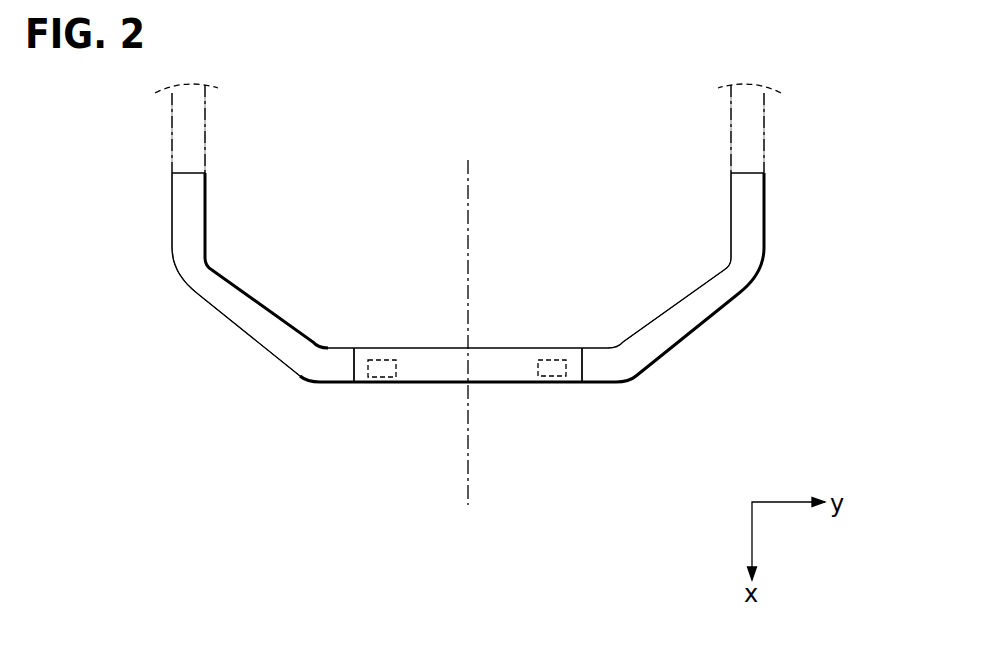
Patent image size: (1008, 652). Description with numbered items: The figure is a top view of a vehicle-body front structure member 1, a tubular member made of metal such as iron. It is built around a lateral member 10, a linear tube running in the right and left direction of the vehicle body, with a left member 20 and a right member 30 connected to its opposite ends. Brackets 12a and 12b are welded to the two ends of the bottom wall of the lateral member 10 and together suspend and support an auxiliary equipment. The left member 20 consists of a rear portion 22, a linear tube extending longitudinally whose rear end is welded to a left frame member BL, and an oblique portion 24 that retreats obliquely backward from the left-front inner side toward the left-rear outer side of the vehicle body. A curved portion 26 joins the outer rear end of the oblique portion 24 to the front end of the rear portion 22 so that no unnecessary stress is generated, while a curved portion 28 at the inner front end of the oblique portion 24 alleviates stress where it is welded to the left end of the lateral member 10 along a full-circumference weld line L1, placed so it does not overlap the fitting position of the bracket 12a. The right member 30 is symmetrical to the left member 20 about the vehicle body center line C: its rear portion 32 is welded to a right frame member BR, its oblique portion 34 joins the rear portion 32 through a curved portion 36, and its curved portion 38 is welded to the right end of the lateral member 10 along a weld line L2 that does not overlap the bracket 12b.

The vehicle-body front structure member 1 is at (610, 158).
The lateral member 10 is at (502, 332).
The bracket 12a is at (555, 387).
The bracket 12b is at (380, 387).
The left member 20 is at (687, 364).
The rear portion 22 is at (747, 222).
The oblique portion 24 is at (675, 317).
The curved portion 26 is at (718, 246).
The curved portion 28 is at (603, 332).
The right member 30 is at (198, 319).
The rear portion 32 is at (193, 208).
The oblique portion 34 is at (263, 320).
The curved portion 36 is at (215, 250).
The curved portion 38 is at (322, 338).
The weld line L1 is at (582, 357).
The weld line L2 is at (360, 354).
The vehicle body center line C is at (469, 228).
The right frame member BR is at (181, 141).
The left frame member BL is at (758, 143).